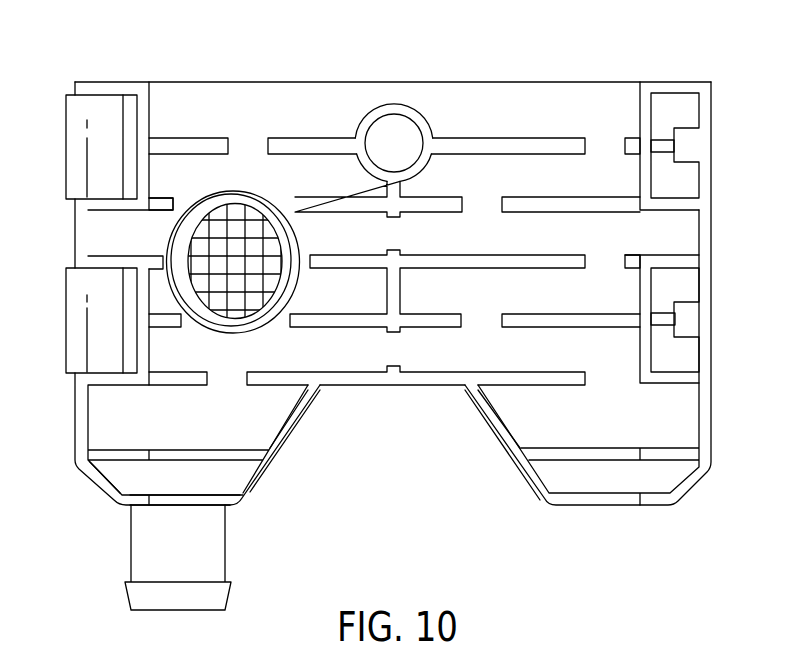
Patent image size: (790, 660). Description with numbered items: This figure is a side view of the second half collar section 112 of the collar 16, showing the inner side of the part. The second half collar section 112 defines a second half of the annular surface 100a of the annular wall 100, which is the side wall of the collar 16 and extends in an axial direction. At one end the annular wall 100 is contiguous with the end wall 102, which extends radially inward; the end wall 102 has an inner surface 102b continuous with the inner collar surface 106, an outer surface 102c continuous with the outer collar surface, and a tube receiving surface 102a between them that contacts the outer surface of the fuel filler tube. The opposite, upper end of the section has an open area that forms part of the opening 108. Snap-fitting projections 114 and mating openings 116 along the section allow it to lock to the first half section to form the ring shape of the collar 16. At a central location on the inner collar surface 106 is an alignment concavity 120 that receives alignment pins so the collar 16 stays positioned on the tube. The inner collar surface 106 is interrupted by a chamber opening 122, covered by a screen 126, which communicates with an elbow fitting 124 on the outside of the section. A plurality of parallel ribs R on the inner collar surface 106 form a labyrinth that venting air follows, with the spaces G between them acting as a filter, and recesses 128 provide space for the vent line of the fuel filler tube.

The collar 16 is at (206, 56).
The annular wall 100 is at (587, 117).
The annular surface of the annular wall 100a is at (253, 82).
The end wall 102 is at (268, 455).
The tube receiving surface 102a is at (240, 496).
The inner surface of the end wall 102b is at (172, 492).
The outer surface of the end wall 102c is at (200, 507).
The inner collar surface 106 is at (525, 413).
The opening 108 is at (310, 103).
The second half collar section 112 is at (502, 82).
The snap-fitting projections 114 is at (77, 162).
The mating openings 116 is at (677, 196).
The alignment concavity 120 is at (422, 142).
The chamber opening 122 is at (272, 306).
The elbow fitting 124 is at (160, 547).
The screen 126 is at (255, 242).
The recesses 128 is at (372, 387).
The groove G is at (295, 204).
The ribs R is at (528, 261).